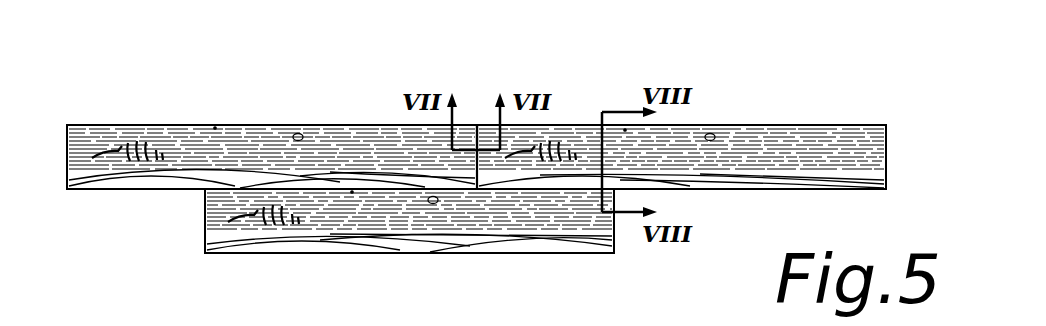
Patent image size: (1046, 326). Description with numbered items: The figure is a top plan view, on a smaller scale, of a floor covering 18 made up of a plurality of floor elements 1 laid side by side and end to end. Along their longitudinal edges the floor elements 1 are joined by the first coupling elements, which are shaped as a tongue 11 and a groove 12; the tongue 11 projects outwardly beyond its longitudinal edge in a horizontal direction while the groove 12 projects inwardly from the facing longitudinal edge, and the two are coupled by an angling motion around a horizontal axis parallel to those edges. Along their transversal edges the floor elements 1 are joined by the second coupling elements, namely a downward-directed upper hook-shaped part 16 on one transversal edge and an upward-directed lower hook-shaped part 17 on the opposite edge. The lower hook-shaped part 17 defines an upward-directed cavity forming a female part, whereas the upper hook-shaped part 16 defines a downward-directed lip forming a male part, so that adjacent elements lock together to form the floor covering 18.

The floor element 1 is at (160, 112).
The tongue 11 is at (205, 190).
The groove 12 is at (205, 190).
The upper hook-shaped part 16 is at (477, 124).
The lower hook-shaped part 17 is at (478, 124).
The floor covering 18 is at (803, 76).